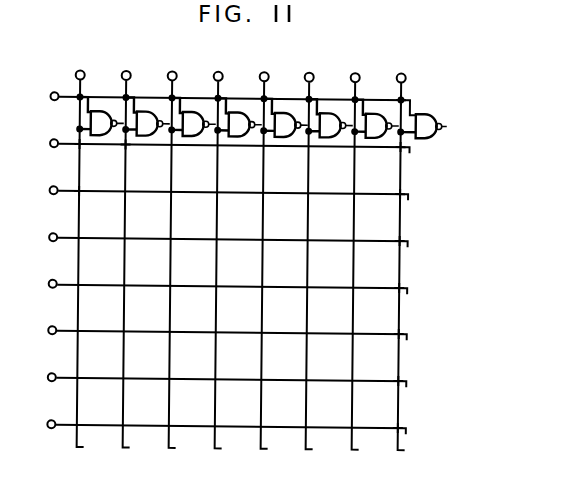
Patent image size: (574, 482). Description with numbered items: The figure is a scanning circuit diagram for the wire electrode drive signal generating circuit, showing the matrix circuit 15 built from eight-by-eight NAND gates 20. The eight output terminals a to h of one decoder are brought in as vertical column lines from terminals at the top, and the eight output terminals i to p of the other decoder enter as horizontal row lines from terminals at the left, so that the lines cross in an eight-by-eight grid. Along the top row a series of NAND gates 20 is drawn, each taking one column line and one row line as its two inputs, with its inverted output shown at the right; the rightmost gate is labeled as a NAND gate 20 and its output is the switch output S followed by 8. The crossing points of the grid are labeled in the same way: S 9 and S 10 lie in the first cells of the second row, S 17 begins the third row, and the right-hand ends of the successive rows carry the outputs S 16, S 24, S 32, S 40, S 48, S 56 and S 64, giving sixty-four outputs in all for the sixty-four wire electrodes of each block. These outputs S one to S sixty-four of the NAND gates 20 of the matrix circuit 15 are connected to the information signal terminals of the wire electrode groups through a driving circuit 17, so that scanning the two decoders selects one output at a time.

The NAND gate 20 is at (428, 106).
The matrix circuit 15 is at (478, 157).
The crosspoint switch S8 8 is at (435, 117).
The crosspoint switch S9 9 is at (95, 163).
The crosspoint switch S10 10 is at (145, 163).
The crosspoint switch S16 16 is at (431, 166).
The driving circuit 17 is at (99, 209).
The crosspoint switch S24 24 is at (432, 214).
The crosspoint switch S32 32 is at (433, 261).
The crosspoint switch S40 40 is at (432, 307).
The crosspoint switch S48 48 is at (431, 354).
The crosspoint switch S56 56 is at (430, 401).
The crosspoint switch S64 64 is at (430, 447).